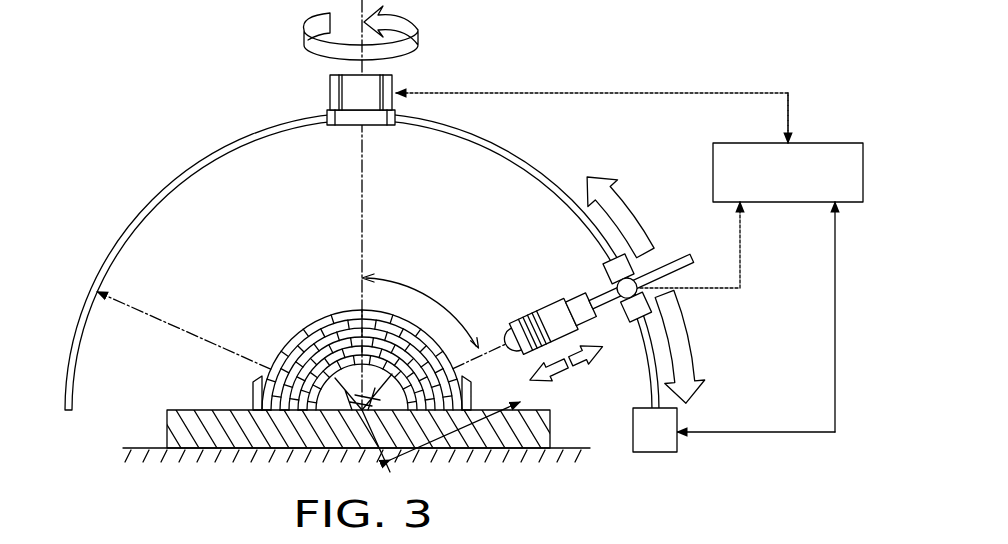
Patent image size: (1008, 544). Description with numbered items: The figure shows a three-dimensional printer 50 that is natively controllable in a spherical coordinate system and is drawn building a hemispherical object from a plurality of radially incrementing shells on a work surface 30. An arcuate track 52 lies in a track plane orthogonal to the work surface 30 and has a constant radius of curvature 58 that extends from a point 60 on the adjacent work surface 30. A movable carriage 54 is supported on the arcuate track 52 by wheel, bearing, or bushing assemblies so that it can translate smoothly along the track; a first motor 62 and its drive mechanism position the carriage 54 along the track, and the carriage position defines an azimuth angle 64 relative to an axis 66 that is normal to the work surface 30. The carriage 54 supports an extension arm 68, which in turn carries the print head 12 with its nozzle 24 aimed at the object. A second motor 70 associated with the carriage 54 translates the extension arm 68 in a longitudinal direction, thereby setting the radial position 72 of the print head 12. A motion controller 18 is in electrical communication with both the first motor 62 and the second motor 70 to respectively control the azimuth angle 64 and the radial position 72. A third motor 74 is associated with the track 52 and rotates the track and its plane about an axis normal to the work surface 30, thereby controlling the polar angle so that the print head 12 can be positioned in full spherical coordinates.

The 3D printer 50 is at (158, 83).
The arcuate track 52 is at (166, 186).
The third motor 74 is at (330, 95).
The axis 66 is at (362, 210).
The azimuth angle 64 is at (437, 300).
The radius of curvature 58 is at (160, 321).
The work surface 30 is at (226, 409).
The point 60 is at (360, 412).
The nozzle 24 is at (508, 330).
The print head 12 is at (548, 305).
The movable carriage 54 is at (618, 262).
The extension arm 68 is at (600, 296).
The second motor 70 is at (650, 273).
The motion controller 18 is at (820, 143).
The first motor 62 is at (643, 444).
The radial position 72 is at (470, 424).